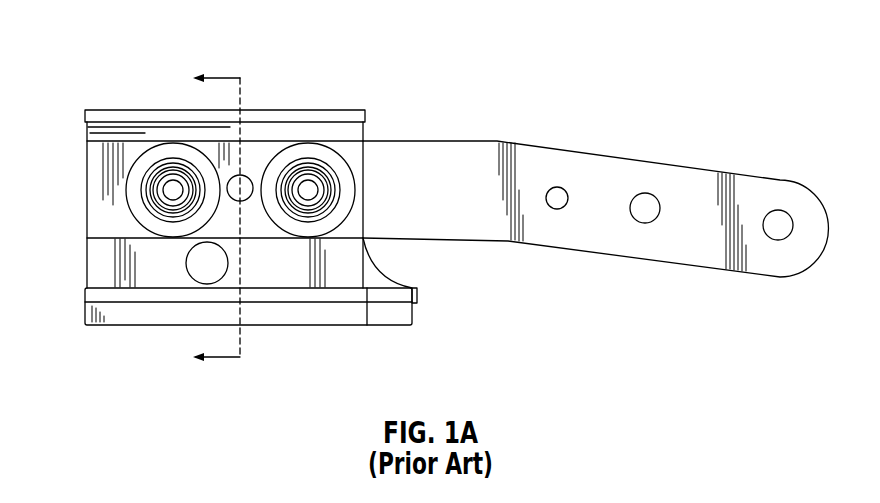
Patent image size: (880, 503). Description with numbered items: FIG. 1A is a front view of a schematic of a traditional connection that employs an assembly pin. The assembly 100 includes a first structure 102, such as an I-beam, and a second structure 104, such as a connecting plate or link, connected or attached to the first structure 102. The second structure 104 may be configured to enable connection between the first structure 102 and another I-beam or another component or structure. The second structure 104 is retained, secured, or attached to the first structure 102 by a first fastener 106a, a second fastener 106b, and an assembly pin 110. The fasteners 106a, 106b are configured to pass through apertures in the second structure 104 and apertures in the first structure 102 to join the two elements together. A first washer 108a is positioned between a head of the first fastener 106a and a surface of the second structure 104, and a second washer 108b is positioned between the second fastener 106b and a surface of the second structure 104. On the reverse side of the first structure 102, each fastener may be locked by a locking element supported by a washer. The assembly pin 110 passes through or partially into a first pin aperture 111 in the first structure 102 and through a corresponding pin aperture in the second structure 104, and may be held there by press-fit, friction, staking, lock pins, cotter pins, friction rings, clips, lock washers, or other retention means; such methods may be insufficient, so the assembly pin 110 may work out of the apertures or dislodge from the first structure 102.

The assembly 100 is at (676, 77).
The first structure 102 is at (142, 109).
The second structure 104 is at (535, 165).
The first fastener 106a is at (148, 197).
The second fastener 106b is at (327, 177).
The first washer 108a is at (129, 176).
The second washer 108b is at (343, 205).
The assembly pin 110 is at (246, 180).
The first pin aperture 111 is at (245, 202).